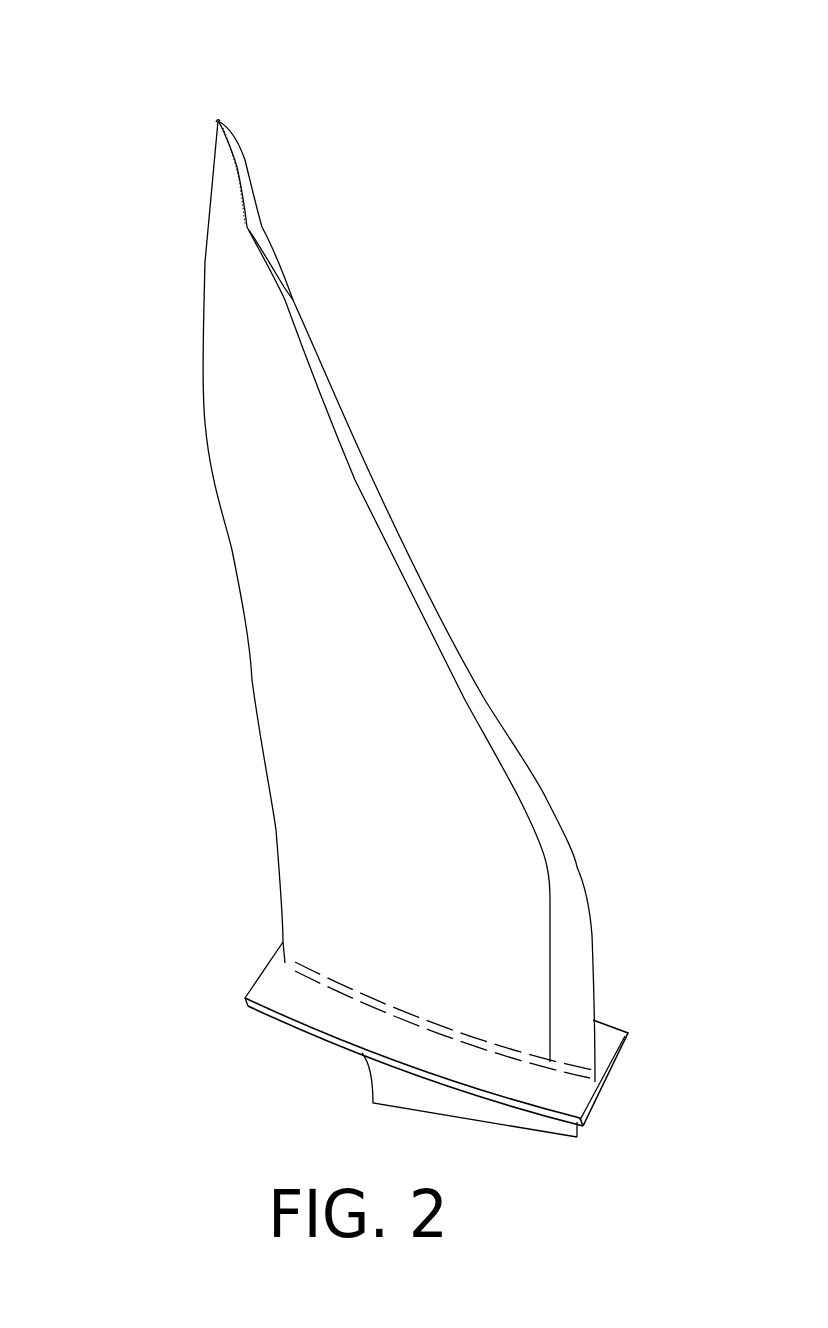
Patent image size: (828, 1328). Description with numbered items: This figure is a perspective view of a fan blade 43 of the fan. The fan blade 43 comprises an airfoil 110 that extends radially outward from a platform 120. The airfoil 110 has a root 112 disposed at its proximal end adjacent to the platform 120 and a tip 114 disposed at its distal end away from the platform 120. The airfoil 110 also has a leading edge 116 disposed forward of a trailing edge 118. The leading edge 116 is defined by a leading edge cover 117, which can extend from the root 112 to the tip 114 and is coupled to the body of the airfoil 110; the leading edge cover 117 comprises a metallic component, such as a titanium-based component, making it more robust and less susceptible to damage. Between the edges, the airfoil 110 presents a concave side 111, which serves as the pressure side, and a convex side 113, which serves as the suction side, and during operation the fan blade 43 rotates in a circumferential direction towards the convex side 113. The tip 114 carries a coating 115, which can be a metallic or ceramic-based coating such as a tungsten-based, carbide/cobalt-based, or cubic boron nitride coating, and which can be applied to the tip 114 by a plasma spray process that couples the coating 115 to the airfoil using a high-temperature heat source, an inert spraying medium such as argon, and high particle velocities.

The fan blade 43 is at (430, 172).
The airfoil 110 is at (308, 738).
The concave side 111 is at (347, 649).
The root 112 is at (487, 1033).
The convex side 113 is at (273, 244).
The tip 114 is at (245, 155).
The coating 115 is at (240, 182).
The leading edge 116 is at (382, 528).
The leading edge cover 117 is at (418, 603).
The trailing edge 118 is at (205, 423).
The platform 120 is at (292, 988).